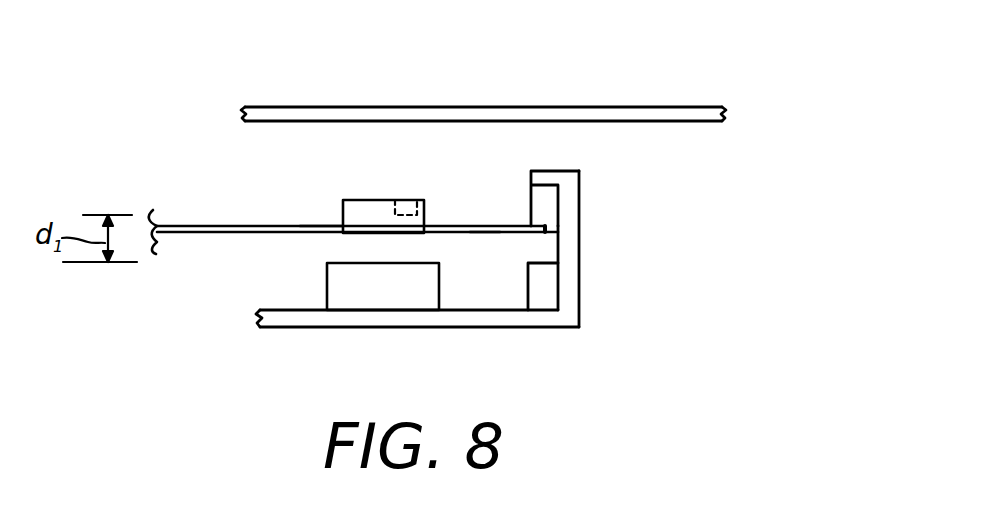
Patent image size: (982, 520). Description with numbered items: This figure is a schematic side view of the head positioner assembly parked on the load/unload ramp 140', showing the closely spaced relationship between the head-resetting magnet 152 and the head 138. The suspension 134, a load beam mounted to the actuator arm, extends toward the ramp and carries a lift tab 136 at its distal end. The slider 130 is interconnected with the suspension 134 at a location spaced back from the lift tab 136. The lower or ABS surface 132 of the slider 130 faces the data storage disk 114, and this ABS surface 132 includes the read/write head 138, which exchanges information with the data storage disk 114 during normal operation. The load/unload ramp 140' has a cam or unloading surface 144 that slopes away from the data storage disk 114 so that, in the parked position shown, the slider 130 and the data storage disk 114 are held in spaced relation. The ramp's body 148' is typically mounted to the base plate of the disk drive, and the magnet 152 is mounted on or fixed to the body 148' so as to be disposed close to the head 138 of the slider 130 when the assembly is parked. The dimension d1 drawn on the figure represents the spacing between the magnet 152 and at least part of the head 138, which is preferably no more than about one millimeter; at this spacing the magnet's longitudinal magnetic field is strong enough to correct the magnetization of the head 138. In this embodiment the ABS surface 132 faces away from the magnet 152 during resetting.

The data storage disk 114 is at (588, 107).
The slider 130 is at (343, 213).
The ABS surface 132 is at (367, 200).
The suspension 134 is at (188, 235).
The lift tab 136 is at (483, 236).
The read/write head 138 is at (410, 210).
The load/unload ramp 140' is at (620, 249).
The unloading surface 144 is at (542, 205).
The body 148' is at (466, 348).
The magnet 152 is at (327, 276).